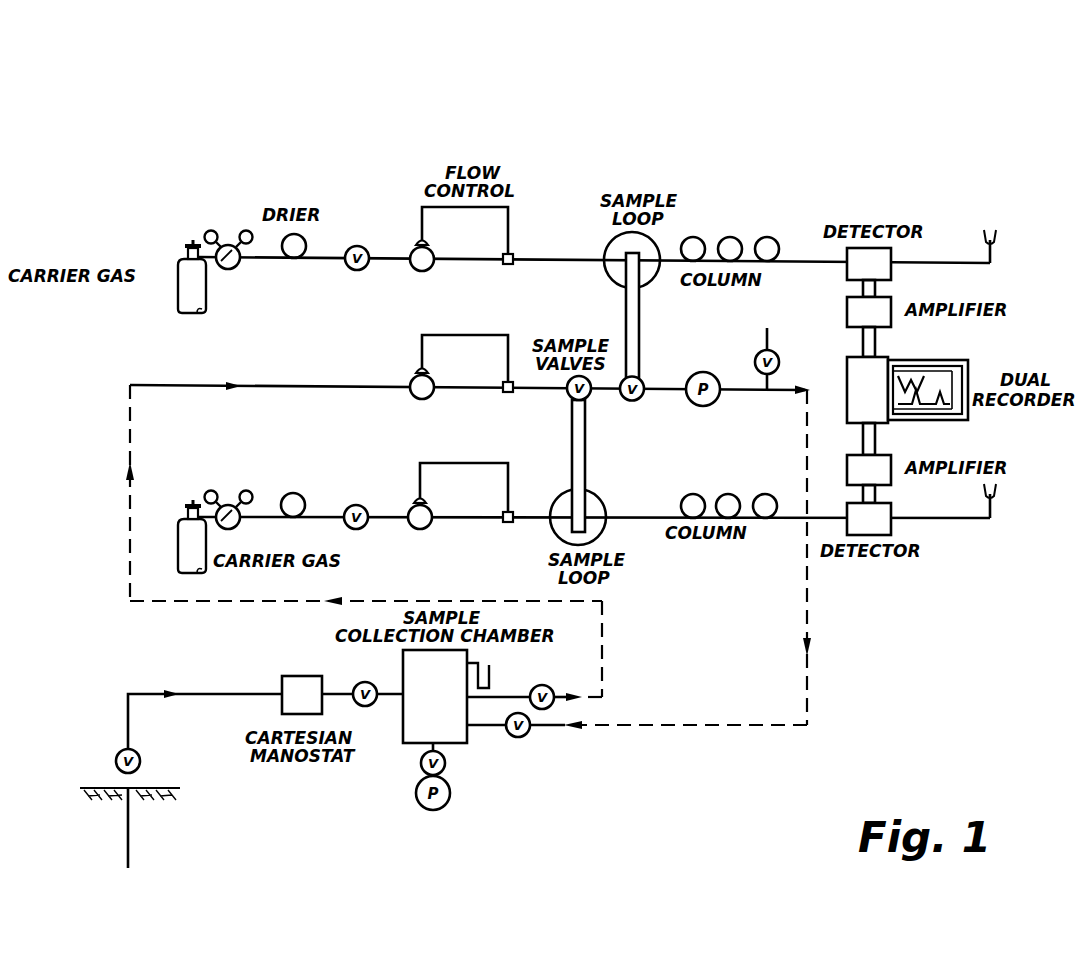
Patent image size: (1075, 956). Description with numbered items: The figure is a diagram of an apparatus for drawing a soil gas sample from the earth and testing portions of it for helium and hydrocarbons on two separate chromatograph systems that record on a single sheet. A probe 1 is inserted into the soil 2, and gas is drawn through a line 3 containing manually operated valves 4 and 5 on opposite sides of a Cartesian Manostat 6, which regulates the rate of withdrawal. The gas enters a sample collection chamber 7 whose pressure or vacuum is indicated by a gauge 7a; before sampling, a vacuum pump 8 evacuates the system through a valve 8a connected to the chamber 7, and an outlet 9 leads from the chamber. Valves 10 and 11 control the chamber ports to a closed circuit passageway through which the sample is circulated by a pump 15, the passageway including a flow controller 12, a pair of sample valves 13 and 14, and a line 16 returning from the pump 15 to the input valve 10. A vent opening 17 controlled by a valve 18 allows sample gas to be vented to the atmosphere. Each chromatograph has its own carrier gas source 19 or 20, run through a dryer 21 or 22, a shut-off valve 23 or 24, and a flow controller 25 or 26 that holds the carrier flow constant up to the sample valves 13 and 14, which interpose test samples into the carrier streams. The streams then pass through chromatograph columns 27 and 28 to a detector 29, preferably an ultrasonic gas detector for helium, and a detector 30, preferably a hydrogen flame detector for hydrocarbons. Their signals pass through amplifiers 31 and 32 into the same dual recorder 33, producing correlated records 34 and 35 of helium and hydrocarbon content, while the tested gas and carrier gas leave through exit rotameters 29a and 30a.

The probe 1 is at (130, 842).
The soil 2 is at (150, 788).
The line 3 is at (152, 693).
The valve 4 is at (141, 760).
The valve 5 is at (366, 682).
The Cartesian Manostat 6 is at (300, 676).
The sample collection chamber 7 is at (440, 686).
The gauge 7a is at (491, 676).
The vacuum pump 8 is at (451, 800).
The valve 8a is at (446, 761).
The outlet conduit 9 is at (498, 696).
The input valve 10 is at (528, 735).
The valve 11 is at (550, 686).
The flow controller 12 is at (455, 335).
The sample valve 13 is at (643, 397).
The sample valve 14 is at (590, 397).
The pump 15 is at (693, 372).
The line 16 is at (808, 608).
The vent opening 17 is at (764, 340).
The valve 18 is at (779, 358).
The carrier gas source 19 is at (186, 288).
The carrier gas source 20 is at (200, 546).
The dryer 21 is at (307, 244).
The dryer 22 is at (296, 490).
The shut-off valve 23 is at (352, 271).
The shut-off valve 24 is at (359, 505).
The flow controller 25 is at (462, 207).
The flow controller 26 is at (465, 463).
The chromatograph column 27 is at (730, 235).
The chromatograph column 28 is at (733, 493).
The detector 29 is at (892, 268).
The exit rotameter 29a is at (997, 232).
The detector 30 is at (892, 527).
The exit rotameter 30a is at (997, 486).
The amplifier 31 is at (846, 305).
The amplifier 32 is at (892, 478).
The dual recorder 33 is at (960, 414).
The record 34 is at (950, 360).
The record 35 is at (945, 420).